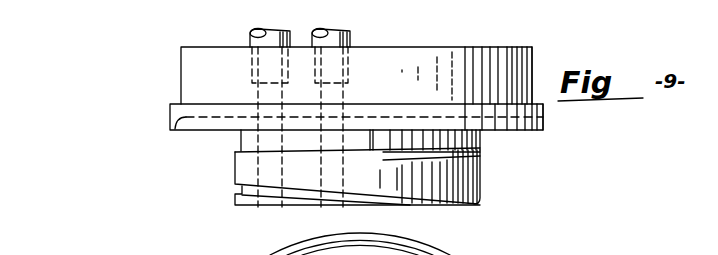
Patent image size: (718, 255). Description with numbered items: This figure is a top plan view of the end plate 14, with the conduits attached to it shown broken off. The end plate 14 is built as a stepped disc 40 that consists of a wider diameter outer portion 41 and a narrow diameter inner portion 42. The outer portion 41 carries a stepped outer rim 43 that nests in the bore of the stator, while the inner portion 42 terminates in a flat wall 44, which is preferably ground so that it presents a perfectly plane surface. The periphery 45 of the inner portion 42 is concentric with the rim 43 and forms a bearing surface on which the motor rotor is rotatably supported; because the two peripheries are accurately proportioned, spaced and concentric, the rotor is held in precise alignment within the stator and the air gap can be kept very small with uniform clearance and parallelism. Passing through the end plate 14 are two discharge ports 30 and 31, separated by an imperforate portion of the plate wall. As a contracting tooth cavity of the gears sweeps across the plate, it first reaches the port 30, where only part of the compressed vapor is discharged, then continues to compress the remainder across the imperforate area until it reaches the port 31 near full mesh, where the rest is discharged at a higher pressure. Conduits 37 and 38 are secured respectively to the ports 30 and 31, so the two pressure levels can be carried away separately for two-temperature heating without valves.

The end plate 14 is at (523, 128).
The discharge port 30 is at (271, 207).
The discharge port 31 is at (333, 205).
The conduit 37 is at (252, 35).
The conduit 38 is at (352, 38).
The stepped disc 40 is at (208, 65).
The wider diameter outer portion 41 is at (190, 90).
The narrow diameter inner portion 42 is at (462, 187).
The stepped outer rim 43 is at (545, 105).
The flat wall 44 is at (438, 205).
The periphery 45 is at (235, 170).